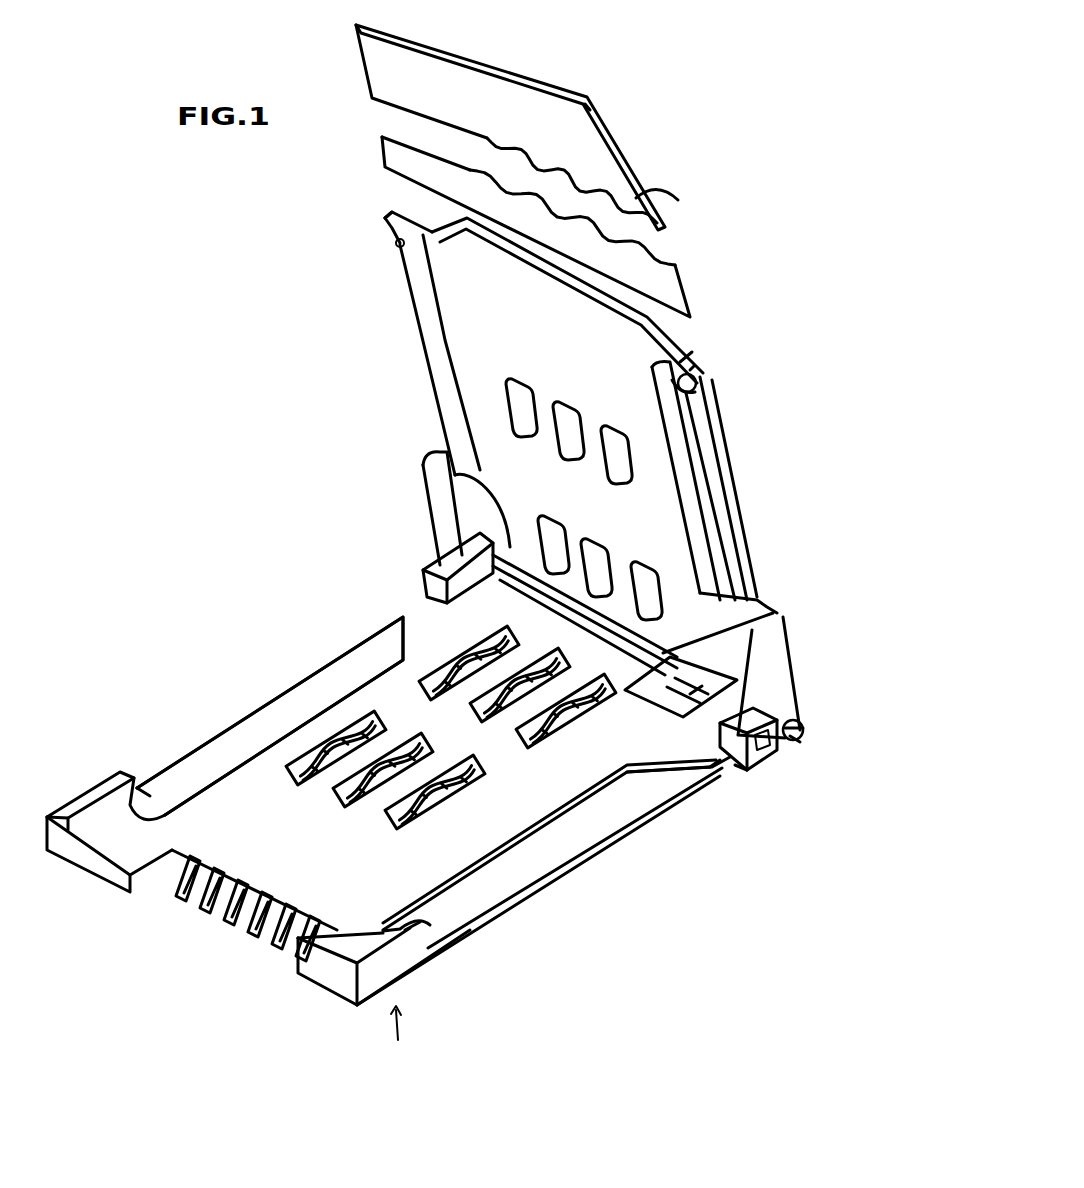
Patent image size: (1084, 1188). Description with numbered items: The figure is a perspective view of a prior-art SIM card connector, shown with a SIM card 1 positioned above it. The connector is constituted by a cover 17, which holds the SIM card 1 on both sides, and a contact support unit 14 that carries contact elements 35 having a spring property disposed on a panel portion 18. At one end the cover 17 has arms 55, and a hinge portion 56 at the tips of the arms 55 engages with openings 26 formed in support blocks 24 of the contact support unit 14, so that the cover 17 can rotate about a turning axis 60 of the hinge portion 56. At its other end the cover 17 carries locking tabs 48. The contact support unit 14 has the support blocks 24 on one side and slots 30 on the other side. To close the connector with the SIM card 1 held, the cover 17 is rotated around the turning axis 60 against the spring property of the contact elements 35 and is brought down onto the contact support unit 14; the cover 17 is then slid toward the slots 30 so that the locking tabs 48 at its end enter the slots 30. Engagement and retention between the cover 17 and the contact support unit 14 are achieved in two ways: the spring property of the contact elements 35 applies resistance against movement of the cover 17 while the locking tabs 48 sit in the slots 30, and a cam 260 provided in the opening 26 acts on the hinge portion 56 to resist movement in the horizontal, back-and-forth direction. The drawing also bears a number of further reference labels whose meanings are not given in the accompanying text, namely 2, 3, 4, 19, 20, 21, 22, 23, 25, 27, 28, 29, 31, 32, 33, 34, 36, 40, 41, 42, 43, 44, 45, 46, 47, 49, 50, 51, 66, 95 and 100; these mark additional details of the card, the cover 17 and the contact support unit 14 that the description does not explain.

The SIM card 1 is at (678, 205).
The card lower portion 2 is at (535, 250).
The card 3 is at (532, 76).
The card chamfered corner 4 is at (620, 141).
The contact support unit 14 is at (424, 1028).
The cover 17 is at (682, 340).
The panel portion 18 is at (712, 748).
The chamfered rail portion 19 is at (655, 780).
The housing 20 is at (400, 652).
The side rail 21 is at (572, 860).
The side wall 22 is at (245, 735).
The rail top surface 23 is at (515, 880).
The support block 24 is at (748, 780).
The left hinge post 25 is at (430, 585).
The opening 26 is at (770, 748).
The rail outer edge 27 is at (483, 938).
The front corner block 28 is at (345, 930).
The corner block top 29 is at (380, 932).
The slot 30 is at (430, 965).
The left end rail 31 is at (100, 790).
The notch edge 32 is at (168, 790).
The rounded notch 33 is at (138, 792).
The contact 34 is at (352, 730).
The contact element 35 is at (410, 760).
The solder tails 36 is at (178, 890).
The cover 40 is at (660, 645).
The cover bottom rail 41 is at (508, 545).
The cover tab 42 is at (695, 655).
The cover right arm 43 is at (712, 452).
The cover left arm 44 is at (413, 303).
The hinge curl 45 is at (700, 375).
The left tab 46 is at (420, 230).
The hinge pin region 47 is at (698, 360).
The locking tab 48 is at (390, 222).
The right flange 49 is at (668, 422).
The left flange 50 is at (445, 336).
The aperture 51 is at (514, 383).
The arm 55 is at (432, 500).
The hinge portion 56 is at (805, 725).
The turning axis 60 is at (803, 728).
The top rail 66 is at (445, 270).
The slit 95 is at (585, 612).
The bar 100 is at (545, 598).
The cam 260 is at (800, 740).